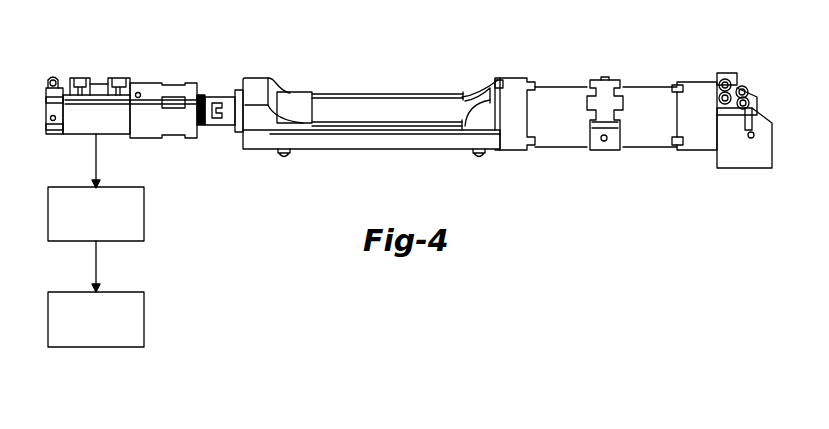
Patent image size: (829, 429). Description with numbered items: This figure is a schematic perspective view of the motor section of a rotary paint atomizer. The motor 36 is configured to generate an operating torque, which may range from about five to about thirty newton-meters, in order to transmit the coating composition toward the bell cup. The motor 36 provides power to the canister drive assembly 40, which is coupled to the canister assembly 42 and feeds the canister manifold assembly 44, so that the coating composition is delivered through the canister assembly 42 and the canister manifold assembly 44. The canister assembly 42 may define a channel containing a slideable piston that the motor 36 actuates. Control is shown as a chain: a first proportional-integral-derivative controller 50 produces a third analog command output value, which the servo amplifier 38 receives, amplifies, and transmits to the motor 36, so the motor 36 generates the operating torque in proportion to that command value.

The motor 36 is at (150, 83).
The servo amplifier 38 is at (106, 224).
The canister drive assembly 40 is at (380, 96).
The canister assembly 42 is at (562, 87).
The canister manifold assembly 44 is at (725, 73).
The first proportional-integral-derivative controller 50 is at (106, 330).